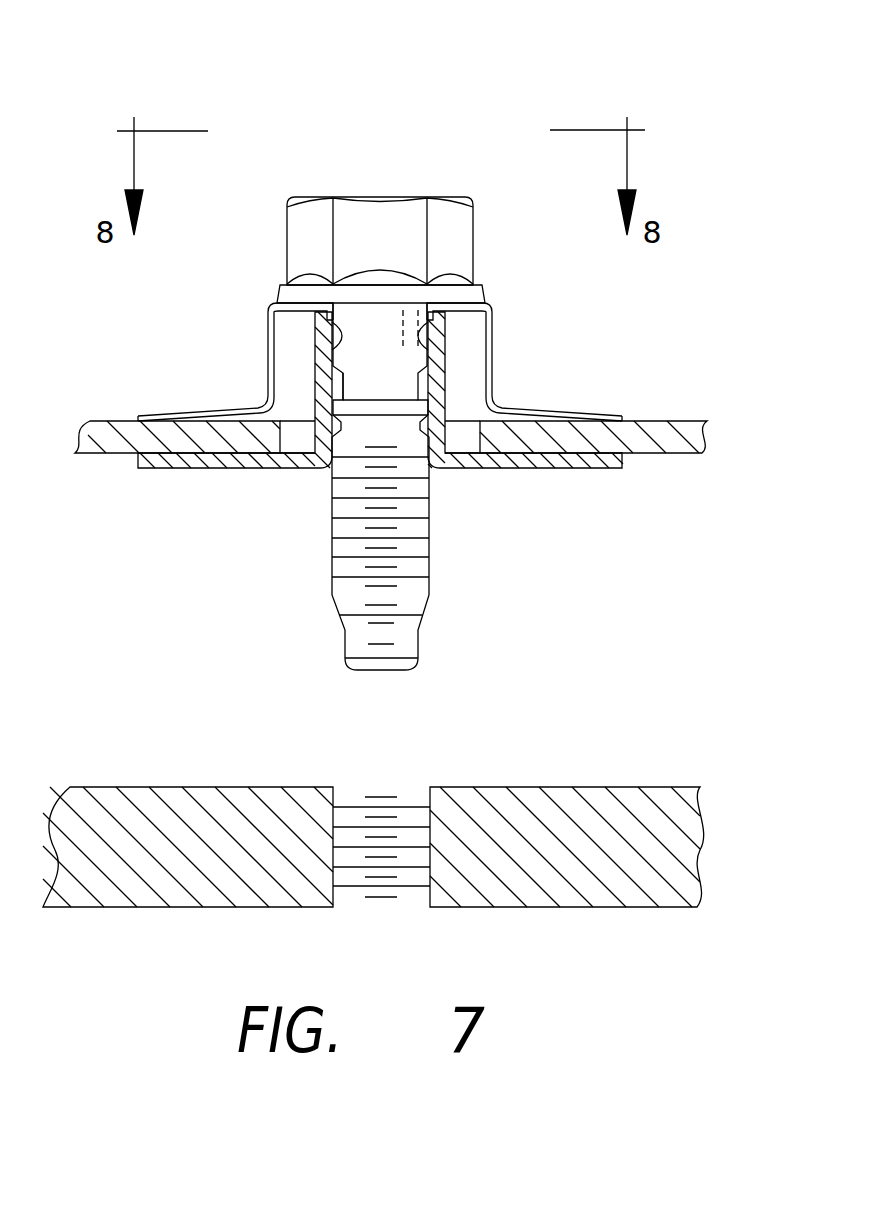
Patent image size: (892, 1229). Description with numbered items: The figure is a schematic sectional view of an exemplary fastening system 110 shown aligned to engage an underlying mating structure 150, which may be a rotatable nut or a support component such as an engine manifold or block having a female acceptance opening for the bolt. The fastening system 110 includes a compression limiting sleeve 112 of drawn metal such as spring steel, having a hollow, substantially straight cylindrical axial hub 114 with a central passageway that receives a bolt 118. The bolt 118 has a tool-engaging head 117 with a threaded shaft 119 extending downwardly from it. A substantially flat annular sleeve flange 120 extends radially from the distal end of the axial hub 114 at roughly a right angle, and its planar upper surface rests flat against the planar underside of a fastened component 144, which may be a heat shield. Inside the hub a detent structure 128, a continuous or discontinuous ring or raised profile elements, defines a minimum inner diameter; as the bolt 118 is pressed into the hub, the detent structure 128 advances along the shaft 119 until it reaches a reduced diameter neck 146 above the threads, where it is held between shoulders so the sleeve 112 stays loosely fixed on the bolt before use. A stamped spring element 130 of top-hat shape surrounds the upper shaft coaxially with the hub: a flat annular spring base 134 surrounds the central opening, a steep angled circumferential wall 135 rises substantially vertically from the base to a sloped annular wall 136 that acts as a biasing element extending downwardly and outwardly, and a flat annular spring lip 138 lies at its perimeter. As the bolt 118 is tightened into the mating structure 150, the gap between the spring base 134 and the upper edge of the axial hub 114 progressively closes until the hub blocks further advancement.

The fastening system 110 is at (513, 96).
The compression limiting sleeve 112 is at (452, 338).
The axial hub 114 is at (441, 404).
The tool-engaging head 117 is at (400, 196).
The bolt 118 is at (325, 486).
The threaded shaft 119 is at (433, 548).
The annular sleeve flange 120 is at (192, 468).
The detent structure 128 is at (343, 337).
The spring element 130 is at (417, 334).
The annular spring base 134 is at (268, 320).
The steep angled circumferential wall 135 is at (268, 347).
The sloped annular wall 136 is at (417, 377).
The annular spring lip 138 is at (605, 415).
The fastened component 144 is at (648, 455).
The reduced diameter neck 146 is at (353, 387).
The mating structure 150 is at (578, 787).